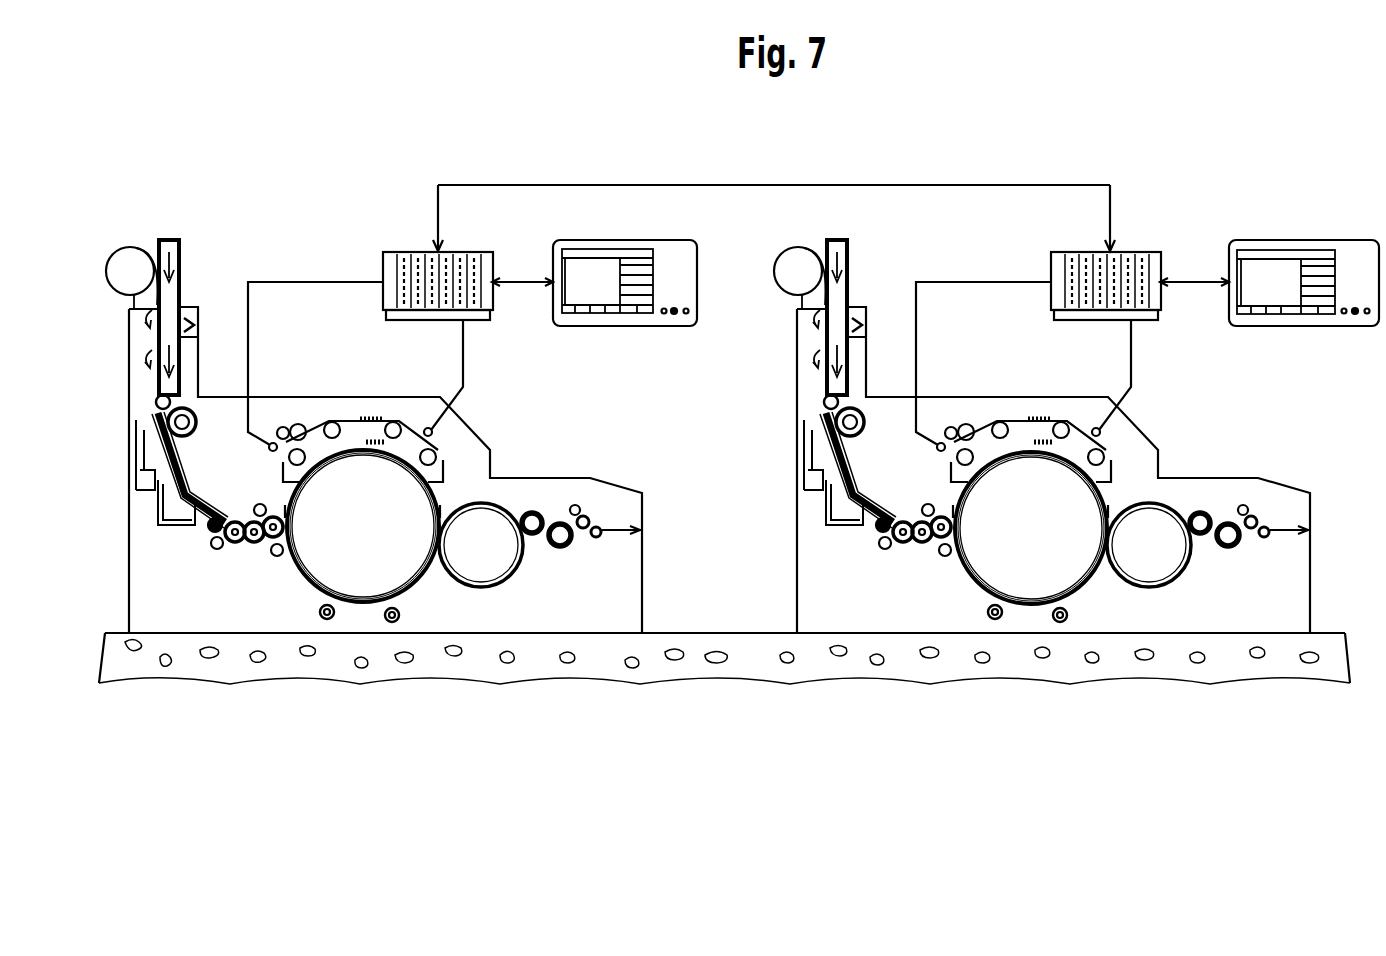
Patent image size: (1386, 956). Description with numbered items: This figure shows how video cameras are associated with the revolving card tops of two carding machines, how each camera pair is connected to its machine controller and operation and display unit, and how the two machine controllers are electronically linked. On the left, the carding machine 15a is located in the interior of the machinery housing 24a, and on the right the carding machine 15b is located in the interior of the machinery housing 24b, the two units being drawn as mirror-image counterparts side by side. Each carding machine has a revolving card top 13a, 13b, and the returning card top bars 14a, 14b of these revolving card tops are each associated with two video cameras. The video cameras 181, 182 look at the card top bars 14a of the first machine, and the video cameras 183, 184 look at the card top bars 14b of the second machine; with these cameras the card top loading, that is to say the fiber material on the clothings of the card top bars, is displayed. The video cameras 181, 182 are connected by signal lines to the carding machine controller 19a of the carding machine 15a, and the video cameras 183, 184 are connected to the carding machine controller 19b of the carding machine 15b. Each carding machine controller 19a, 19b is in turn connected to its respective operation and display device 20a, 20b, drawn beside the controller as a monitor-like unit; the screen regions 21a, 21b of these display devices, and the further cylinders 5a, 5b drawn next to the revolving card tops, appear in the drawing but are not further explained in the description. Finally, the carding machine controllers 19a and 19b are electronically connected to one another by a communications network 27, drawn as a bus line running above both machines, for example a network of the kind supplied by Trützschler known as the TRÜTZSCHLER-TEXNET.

The communications network 27 is at (884, 184).
The carding machine controller 19a is at (383, 264).
The carding machine controller 19b is at (1051, 264).
The operation and display device 20a is at (676, 322).
The operation and display device 20b is at (1357, 322).
The display screen 21a is at (588, 298).
The display screen 21b is at (1266, 299).
The card top bars 14a is at (362, 417).
The card top bars 14b is at (1030, 417).
The revolving card top 13a is at (362, 437).
The revolving card top 13b is at (1024, 437).
The carding machine 15a is at (352, 575).
The carding machine 15b is at (1020, 578).
The impression cylinder 5a is at (484, 574).
The impression cylinder 5b is at (1153, 574).
The video camera 181 is at (274, 442).
The video camera 182 is at (428, 428).
The video camera 183 is at (942, 442).
The video camera 184 is at (1096, 428).
The machinery housing 24a is at (643, 598).
The machinery housing 24b is at (1312, 616).